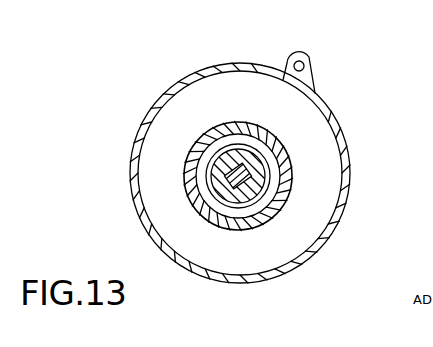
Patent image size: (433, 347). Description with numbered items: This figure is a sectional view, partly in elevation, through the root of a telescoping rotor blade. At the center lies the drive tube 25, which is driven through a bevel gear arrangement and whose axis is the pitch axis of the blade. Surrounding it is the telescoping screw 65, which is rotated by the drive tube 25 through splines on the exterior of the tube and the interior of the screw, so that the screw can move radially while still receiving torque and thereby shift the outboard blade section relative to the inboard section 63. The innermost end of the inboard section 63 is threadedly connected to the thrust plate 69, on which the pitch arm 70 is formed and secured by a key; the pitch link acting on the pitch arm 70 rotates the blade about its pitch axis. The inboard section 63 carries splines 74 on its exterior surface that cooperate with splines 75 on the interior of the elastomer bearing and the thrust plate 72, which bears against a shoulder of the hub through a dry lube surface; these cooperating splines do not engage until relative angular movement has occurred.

The thrust plate 69 is at (178, 88).
The pitch arm 70 is at (312, 54).
The thrust plate 72 is at (196, 133).
The inboard section 63 is at (178, 175).
The splines 75 is at (270, 118).
The splines 74 is at (282, 132).
The telescoping screw 65 is at (272, 188).
The drive tube 25 is at (236, 182).